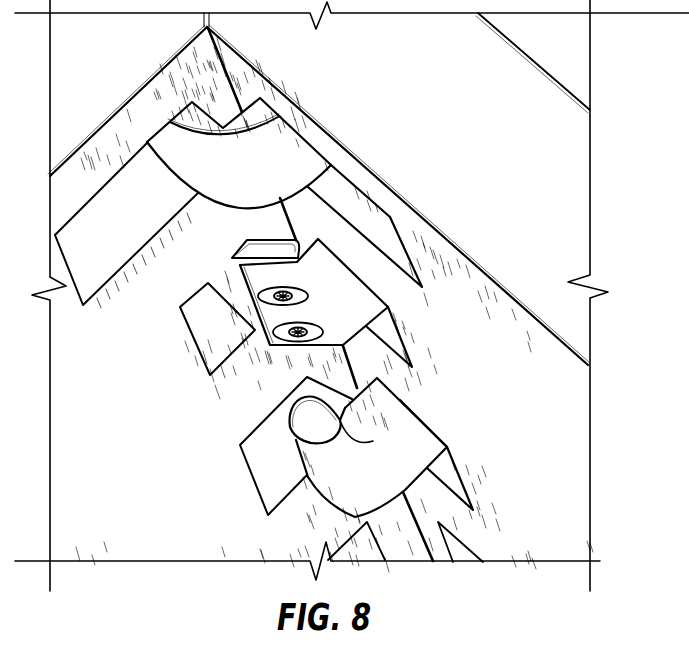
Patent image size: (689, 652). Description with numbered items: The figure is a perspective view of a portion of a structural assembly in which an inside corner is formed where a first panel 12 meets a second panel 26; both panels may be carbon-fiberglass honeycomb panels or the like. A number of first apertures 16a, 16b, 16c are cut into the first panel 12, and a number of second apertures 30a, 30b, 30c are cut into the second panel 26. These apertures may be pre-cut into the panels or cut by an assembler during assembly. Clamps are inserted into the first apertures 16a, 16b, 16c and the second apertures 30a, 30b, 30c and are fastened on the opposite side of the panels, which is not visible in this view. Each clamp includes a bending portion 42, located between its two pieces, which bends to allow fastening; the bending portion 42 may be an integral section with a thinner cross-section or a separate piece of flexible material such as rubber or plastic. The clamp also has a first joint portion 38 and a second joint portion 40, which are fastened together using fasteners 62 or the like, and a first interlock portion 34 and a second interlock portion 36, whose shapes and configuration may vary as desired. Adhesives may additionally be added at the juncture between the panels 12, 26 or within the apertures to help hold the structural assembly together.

The first panel 12 is at (110, 71).
The second panel 26 is at (465, 130).
The first aperture 16a is at (121, 250).
The first aperture 16b is at (241, 342).
The first aperture 16c is at (299, 479).
The bending portion 42 is at (279, 168).
The second aperture 30a is at (386, 235).
The second aperture 30b is at (378, 332).
The second aperture 30c is at (440, 468).
The second joint portion 40 is at (275, 268).
The first joint portion 38 is at (272, 248).
The fastener 62 is at (292, 337).
The first interlock portion 34 is at (371, 447).
The second interlock portion 36 is at (308, 415).